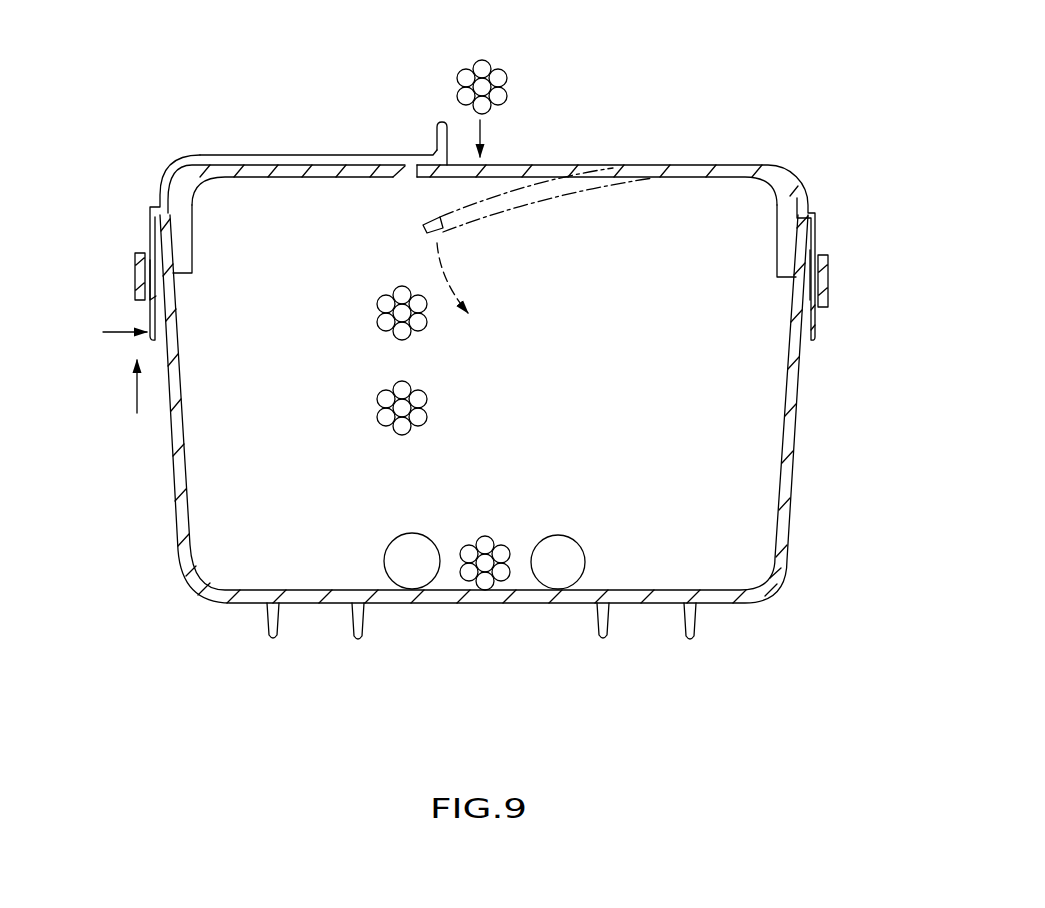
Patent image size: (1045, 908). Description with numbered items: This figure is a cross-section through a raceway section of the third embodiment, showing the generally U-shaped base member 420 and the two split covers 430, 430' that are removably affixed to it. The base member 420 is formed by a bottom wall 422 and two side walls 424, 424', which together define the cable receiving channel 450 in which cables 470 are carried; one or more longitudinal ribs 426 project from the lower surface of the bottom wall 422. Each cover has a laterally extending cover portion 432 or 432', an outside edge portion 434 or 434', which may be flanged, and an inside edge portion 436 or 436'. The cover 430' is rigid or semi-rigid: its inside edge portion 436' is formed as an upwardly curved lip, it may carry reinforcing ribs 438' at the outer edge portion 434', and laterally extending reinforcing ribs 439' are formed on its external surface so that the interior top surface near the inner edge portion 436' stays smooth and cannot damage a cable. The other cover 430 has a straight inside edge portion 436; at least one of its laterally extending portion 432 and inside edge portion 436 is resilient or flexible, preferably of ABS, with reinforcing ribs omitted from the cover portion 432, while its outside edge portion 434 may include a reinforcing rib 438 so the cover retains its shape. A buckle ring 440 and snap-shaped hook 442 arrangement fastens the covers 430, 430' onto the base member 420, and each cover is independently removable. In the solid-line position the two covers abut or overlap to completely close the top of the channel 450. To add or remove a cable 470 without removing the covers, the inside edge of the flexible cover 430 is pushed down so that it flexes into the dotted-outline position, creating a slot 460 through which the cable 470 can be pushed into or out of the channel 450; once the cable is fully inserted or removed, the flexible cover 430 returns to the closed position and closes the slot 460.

The base member 420 is at (795, 537).
The bottom wall 422 is at (517, 602).
The side wall 424 is at (829, 397).
The side wall 424' is at (136, 407).
The longitudinal ribs 426 is at (690, 640).
The split cover 430 is at (633, 189).
The split cover 430' is at (231, 204).
The laterally extending cover portion 432 is at (614, 119).
The laterally extending cover portion 432' is at (268, 131).
The outside edge portion 434 is at (846, 206).
The outside edge portion 434' is at (110, 223).
The inside edge portion 436 is at (404, 105).
The inside edge portion 436' is at (379, 120).
The reinforcing rib 438 is at (714, 242).
The reinforcing ribs 438' is at (241, 279).
The laterally extending reinforcing ribs 439' is at (318, 100).
The buckle ring 440 is at (820, 282).
The snap-shaped hook 442 is at (818, 330).
The cable receiving channel 450 is at (527, 387).
The slot 460 is at (420, 197).
The cables 470 is at (500, 72).